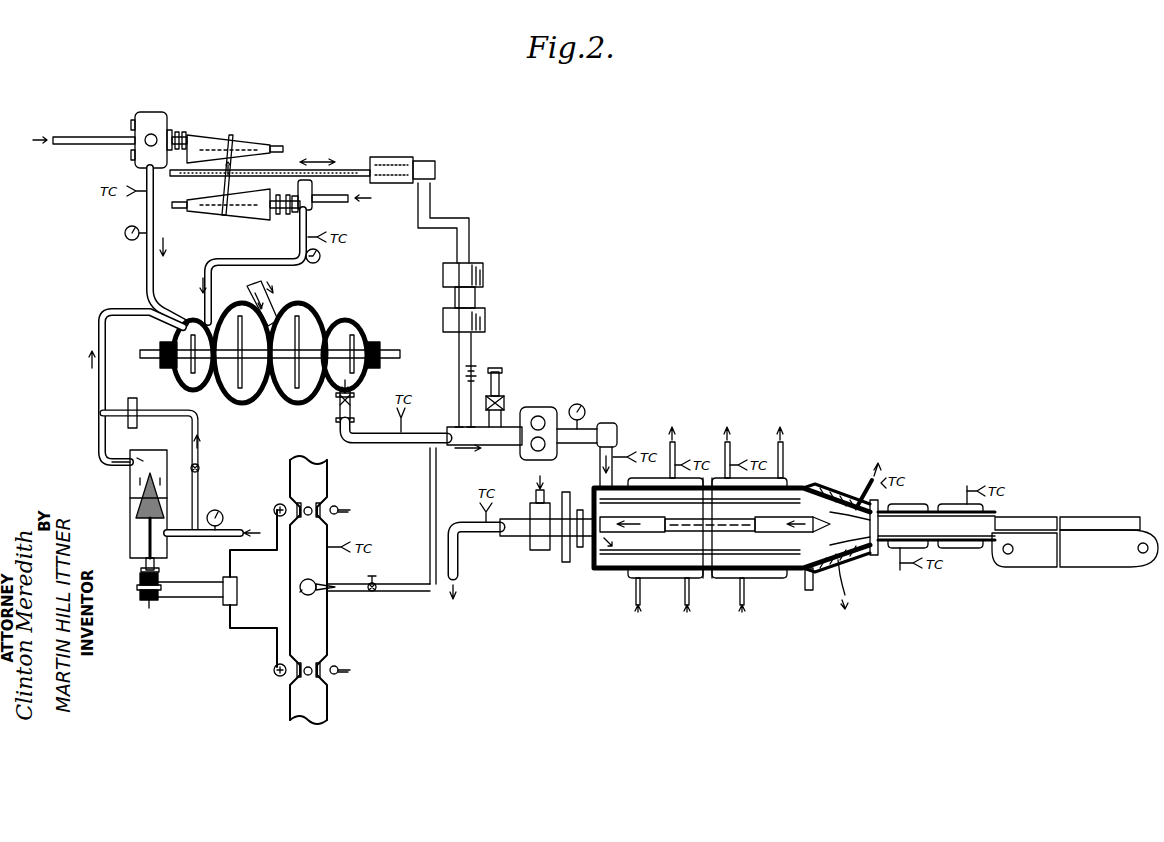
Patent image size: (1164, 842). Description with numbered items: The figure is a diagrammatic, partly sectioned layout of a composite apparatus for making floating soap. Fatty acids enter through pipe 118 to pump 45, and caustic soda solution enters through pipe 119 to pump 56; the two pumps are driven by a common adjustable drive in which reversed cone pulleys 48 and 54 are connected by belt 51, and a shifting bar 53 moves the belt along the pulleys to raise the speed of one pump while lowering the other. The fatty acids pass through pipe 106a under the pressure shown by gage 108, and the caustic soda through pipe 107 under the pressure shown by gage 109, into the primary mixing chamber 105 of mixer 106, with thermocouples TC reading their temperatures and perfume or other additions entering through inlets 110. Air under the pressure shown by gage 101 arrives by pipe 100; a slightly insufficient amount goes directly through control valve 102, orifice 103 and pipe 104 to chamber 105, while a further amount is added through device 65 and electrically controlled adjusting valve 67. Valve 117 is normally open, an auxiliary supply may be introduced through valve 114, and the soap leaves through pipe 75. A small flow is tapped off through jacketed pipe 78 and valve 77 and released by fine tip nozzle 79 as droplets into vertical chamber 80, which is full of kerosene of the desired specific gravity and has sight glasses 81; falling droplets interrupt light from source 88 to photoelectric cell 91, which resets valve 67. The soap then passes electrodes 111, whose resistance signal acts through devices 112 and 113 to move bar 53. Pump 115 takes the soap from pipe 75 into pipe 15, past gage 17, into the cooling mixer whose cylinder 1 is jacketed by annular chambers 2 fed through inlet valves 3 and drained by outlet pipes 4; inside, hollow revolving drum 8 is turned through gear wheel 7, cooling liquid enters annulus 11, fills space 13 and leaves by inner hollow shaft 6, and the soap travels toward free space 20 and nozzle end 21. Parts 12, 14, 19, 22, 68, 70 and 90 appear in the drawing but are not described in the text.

The pipe 118 is at (67, 136).
The pump 45 is at (151, 112).
The cone pulley 48 is at (204, 137).
The belt 51 is at (240, 135).
The shifting bar 53 is at (346, 165).
The electrical mechanism 113 is at (401, 157).
The cone pulley 54 is at (245, 211).
The pump 56 is at (309, 184).
The pipe 119 is at (343, 203).
The pipe 107 is at (299, 248).
The pressure gage 109 is at (321, 257).
The pipe 106a is at (146, 207).
The pressure gage 108 is at (126, 237).
The primary mixing chamber 105 is at (187, 329).
The mixer 106 is at (307, 310).
The inlets 110 is at (250, 300).
The pipe 104 is at (100, 389).
The orifice 103 is at (131, 398).
The control valve 102 is at (200, 468).
The valve 117 is at (336, 413).
The pipe 75 is at (391, 441).
The electrodes 111 is at (466, 428).
The electrical devices and amplifiers 112 is at (443, 315).
The valve 114 is at (504, 397).
The pump 115 is at (540, 407).
The pressure gage 17 is at (585, 405).
The pipe 15 is at (605, 424).
The inner hollow shaft 6 is at (462, 540).
The annulus 11 is at (533, 550).
The gear wheel 7 is at (563, 561).
The cylinder 1 is at (800, 480).
The annular chambers 2 is at (645, 480).
The outlet pipes 4 is at (676, 452).
The inlet valves 3 is at (633, 590).
The hollow revolving drum 8 is at (653, 540).
The screw conveyor section 12 is at (609, 508).
The space 13 is at (710, 514).
The conveyor section 14 is at (808, 514).
The conical discharge 19 is at (833, 486).
The free space 20 is at (868, 548).
The nozzle end 21 is at (890, 511).
The jacket 22 is at (940, 504).
The device 65 is at (130, 542).
The adjusting valve 67 is at (140, 509).
The inlet pipe 68 is at (121, 463).
The motor 70 is at (141, 585).
The pipe 100 is at (234, 530).
The pressure gage 101 is at (218, 510).
The valve 90 is at (278, 503).
The photoelectric cell 91 is at (276, 678).
The vertical chamber 80 is at (328, 625).
The light source 88 is at (335, 506).
The fine tip nozzle 79 is at (318, 586).
The sight glasses 81 is at (300, 592).
The jacketed pipe 78 is at (394, 584).
The valve 77 is at (373, 593).